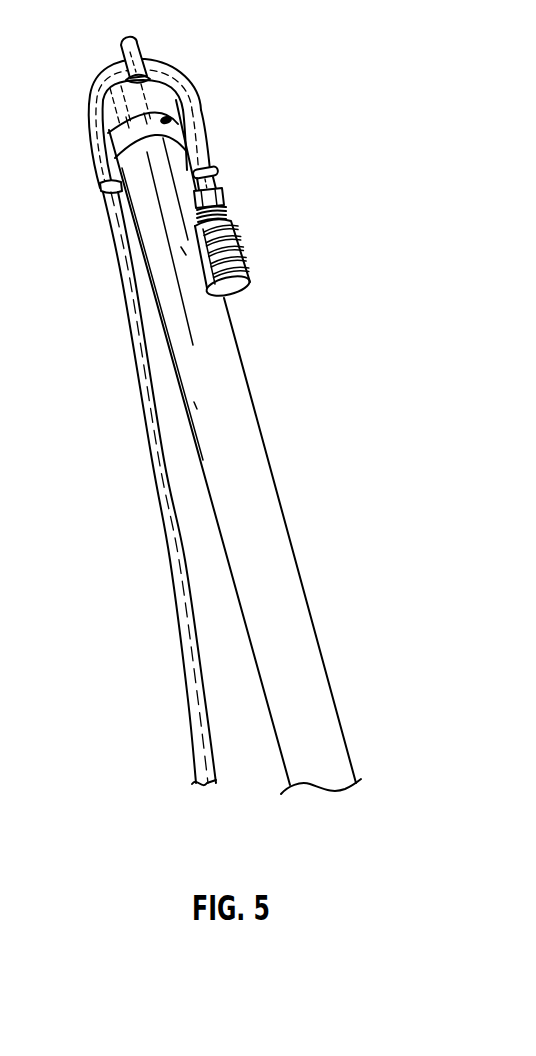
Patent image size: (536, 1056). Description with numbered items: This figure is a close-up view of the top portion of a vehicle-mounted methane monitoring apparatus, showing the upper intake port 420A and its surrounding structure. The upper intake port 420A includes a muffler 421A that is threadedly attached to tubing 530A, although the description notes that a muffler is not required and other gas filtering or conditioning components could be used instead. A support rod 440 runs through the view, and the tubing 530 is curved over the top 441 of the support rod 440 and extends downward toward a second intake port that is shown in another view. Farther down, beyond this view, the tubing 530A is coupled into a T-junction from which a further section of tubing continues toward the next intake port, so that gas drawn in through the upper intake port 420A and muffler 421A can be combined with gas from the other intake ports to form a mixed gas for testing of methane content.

The support rod 440 is at (258, 452).
The top 441 is at (127, 79).
The tubing 530 is at (205, 156).
The upper intake port 420A is at (220, 188).
The muffler 421A is at (235, 242).
The tubing 530A is at (175, 590).